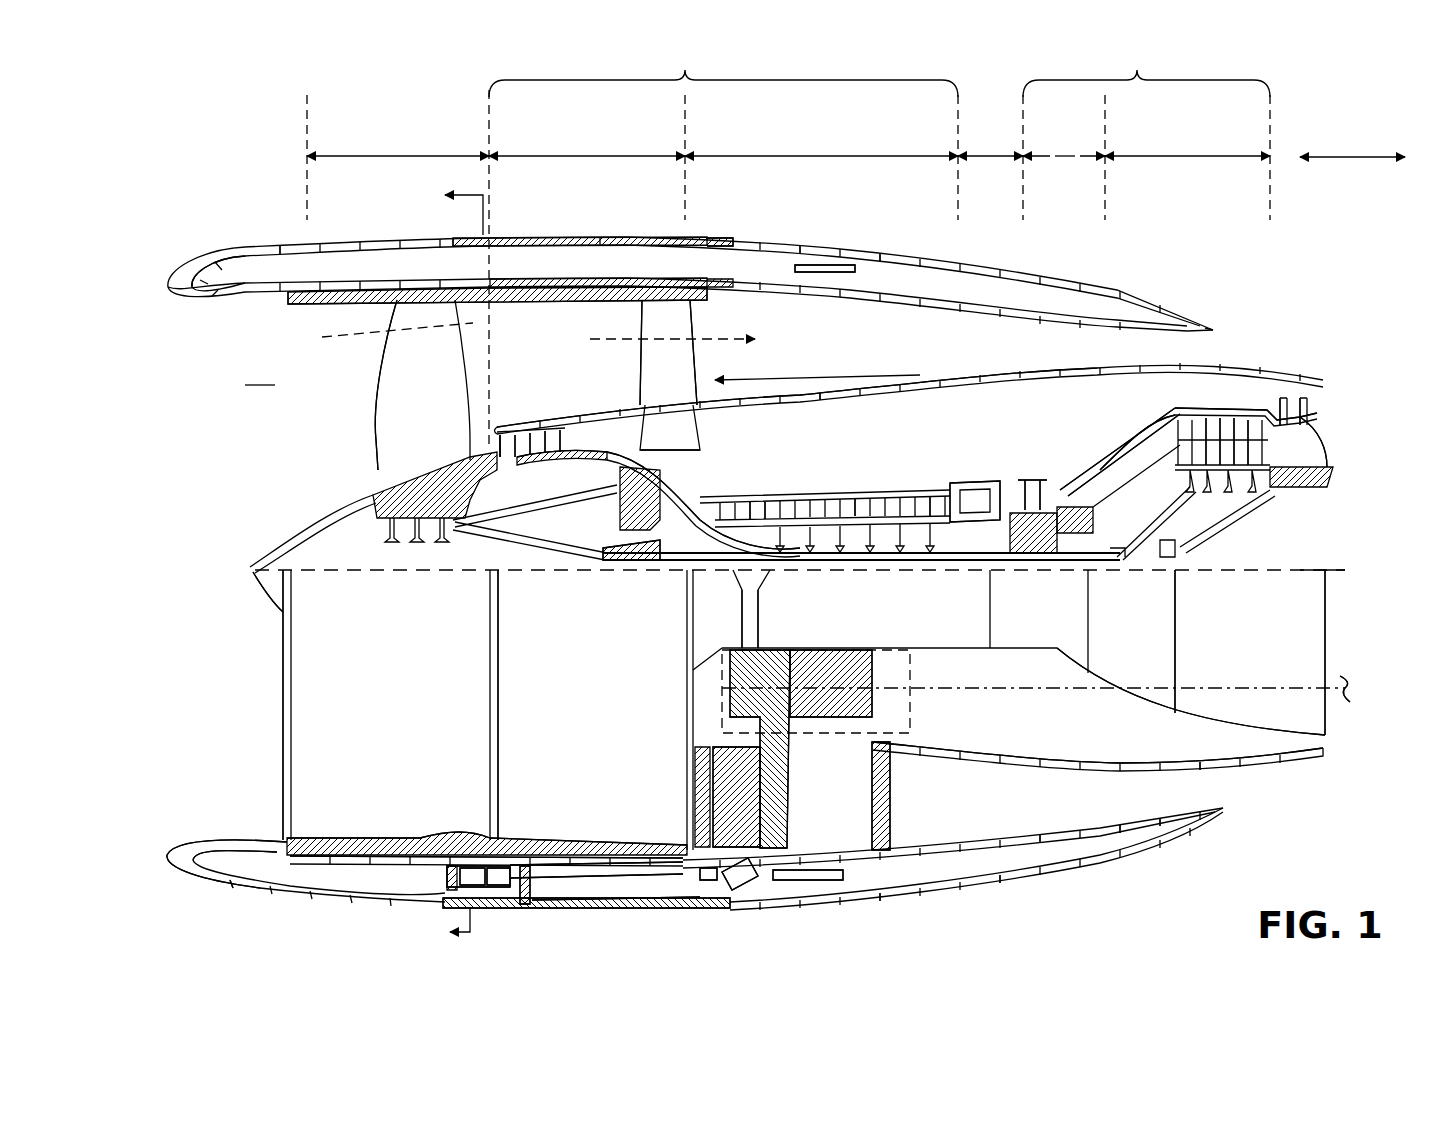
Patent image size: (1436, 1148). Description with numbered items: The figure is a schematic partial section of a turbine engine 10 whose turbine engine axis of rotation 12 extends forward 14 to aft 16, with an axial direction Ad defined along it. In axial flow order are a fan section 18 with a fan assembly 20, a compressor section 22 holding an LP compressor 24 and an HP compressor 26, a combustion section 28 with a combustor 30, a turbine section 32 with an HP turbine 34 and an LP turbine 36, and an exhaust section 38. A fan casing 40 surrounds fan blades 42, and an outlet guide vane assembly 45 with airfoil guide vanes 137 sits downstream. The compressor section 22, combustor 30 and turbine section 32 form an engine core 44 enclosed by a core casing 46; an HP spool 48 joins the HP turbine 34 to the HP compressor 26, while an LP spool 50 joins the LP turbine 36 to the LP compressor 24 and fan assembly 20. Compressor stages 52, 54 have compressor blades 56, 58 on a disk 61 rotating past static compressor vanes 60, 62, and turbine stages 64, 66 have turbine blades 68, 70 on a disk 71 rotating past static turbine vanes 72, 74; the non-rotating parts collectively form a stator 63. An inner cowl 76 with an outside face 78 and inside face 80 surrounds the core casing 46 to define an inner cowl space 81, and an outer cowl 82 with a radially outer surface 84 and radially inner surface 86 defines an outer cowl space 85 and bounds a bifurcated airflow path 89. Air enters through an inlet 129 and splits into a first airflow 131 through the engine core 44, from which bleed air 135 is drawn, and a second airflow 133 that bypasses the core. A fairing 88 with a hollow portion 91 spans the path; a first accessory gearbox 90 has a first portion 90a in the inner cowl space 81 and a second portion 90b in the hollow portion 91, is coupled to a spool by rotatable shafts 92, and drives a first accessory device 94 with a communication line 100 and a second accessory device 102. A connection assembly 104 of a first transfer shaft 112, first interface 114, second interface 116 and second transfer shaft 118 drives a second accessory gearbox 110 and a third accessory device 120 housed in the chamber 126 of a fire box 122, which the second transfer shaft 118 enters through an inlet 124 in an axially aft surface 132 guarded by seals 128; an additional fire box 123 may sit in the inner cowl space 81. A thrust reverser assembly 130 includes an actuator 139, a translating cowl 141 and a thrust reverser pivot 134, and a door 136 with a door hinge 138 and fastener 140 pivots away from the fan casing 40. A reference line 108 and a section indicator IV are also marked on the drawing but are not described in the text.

The turbine engine 10 is at (1332, 278).
The turbine engine axis of rotation 12 is at (1235, 570).
The forward 14 is at (203, 600).
The aft 16 is at (1335, 562).
The fan section 18 is at (398, 142).
The fan assembly 20 is at (340, 447).
The compressor section 22 is at (723, 69).
The low-pressure compressor 24 is at (587, 142).
The high-pressure compressor 26 is at (821, 142).
The combustion section 28 is at (990, 140).
The combustor 30 is at (992, 498).
The turbine section 32 is at (1146, 69).
The HP turbine 34 is at (1064, 140).
The LP turbine 36 is at (1187, 142).
The exhaust section 38 is at (1335, 425).
The fan casing 40 is at (512, 278).
The fan blades 42 is at (447, 338).
The engine core 44 is at (1120, 438).
The outlet guide vane assembly 45 is at (817, 367).
The core casing 46 is at (1148, 430).
The HP spool 48 is at (940, 495).
The LP spool 50 is at (617, 548).
The compressor stages 52 is at (560, 375).
The compressor stages 54 is at (815, 412).
The compressor blades 56 is at (532, 440).
The compressor blades 58 is at (750, 498).
The static compressor vanes 60 is at (503, 440).
The disk 61 is at (520, 462).
The static compressor vanes 62 is at (762, 495).
The stator 63 is at (1196, 400).
The turbine stages 64 is at (1020, 410).
The turbine stages 66 is at (1248, 318).
The turbine blades 68 is at (1042, 492).
The turbine blades 70 is at (1250, 428).
The disk 71 is at (1098, 448).
The static turbine vanes 72 is at (1020, 492).
The static turbine vanes 74 is at (1238, 430).
The inner cowl 76 is at (935, 380).
The outside face 78 is at (1242, 770).
The inside face 80 is at (1255, 762).
The inner cowl space 81 is at (1100, 790).
The outer cowl 82 is at (395, 236).
The radially outer surface 84 is at (212, 884).
The outer cowl space 85 is at (342, 270).
The radially inner surface 86 is at (250, 840).
The fairing 88 is at (895, 805).
The bifurcated airflow path 89 is at (1118, 790).
The first accessory gearbox 90 is at (785, 648).
The first portion 90a is at (792, 718).
The second portion 90b is at (790, 870).
The hollow portion 91 is at (845, 800).
The rotatable shafts 92 is at (760, 615).
The first accessory device 94 is at (1023, 793).
The communication line 100 is at (1262, 688).
The second accessory device 102 is at (640, 862).
The connection assembly 104 is at (725, 895).
The fan blade tip line 108 is at (368, 336).
The second accessory gearbox 110 is at (492, 848).
The first transfer shaft 112 is at (760, 870).
The first interface 114 is at (738, 890).
The second interface 116 is at (715, 888).
The second transfer shaft 118 is at (576, 882).
The third accessory device 120 is at (470, 887).
The fire box 122 is at (430, 880).
The additional fire box 123 is at (940, 760).
The inlet 124 is at (525, 855).
The chamber 126 is at (495, 888).
The seals 128 is at (526, 905).
The inlet 129 is at (243, 396).
The thrust reverser assembly 130 is at (855, 235).
The first airflow 131 is at (700, 490).
The axially aft surface 132 is at (565, 862).
The second airflow 133 is at (600, 331).
The thrust reverser pivot 134 is at (718, 243).
The bleed air 135 is at (840, 492).
The door 136 is at (607, 240).
The airfoil guide vanes 137 is at (645, 372).
The door hinge 138 is at (452, 240).
The actuator 139 is at (818, 265).
The fastener 140 is at (453, 882).
The translating cowl 141 is at (886, 254).
The axial direction Ad is at (1352, 157).
The section line IV is at (452, 190).